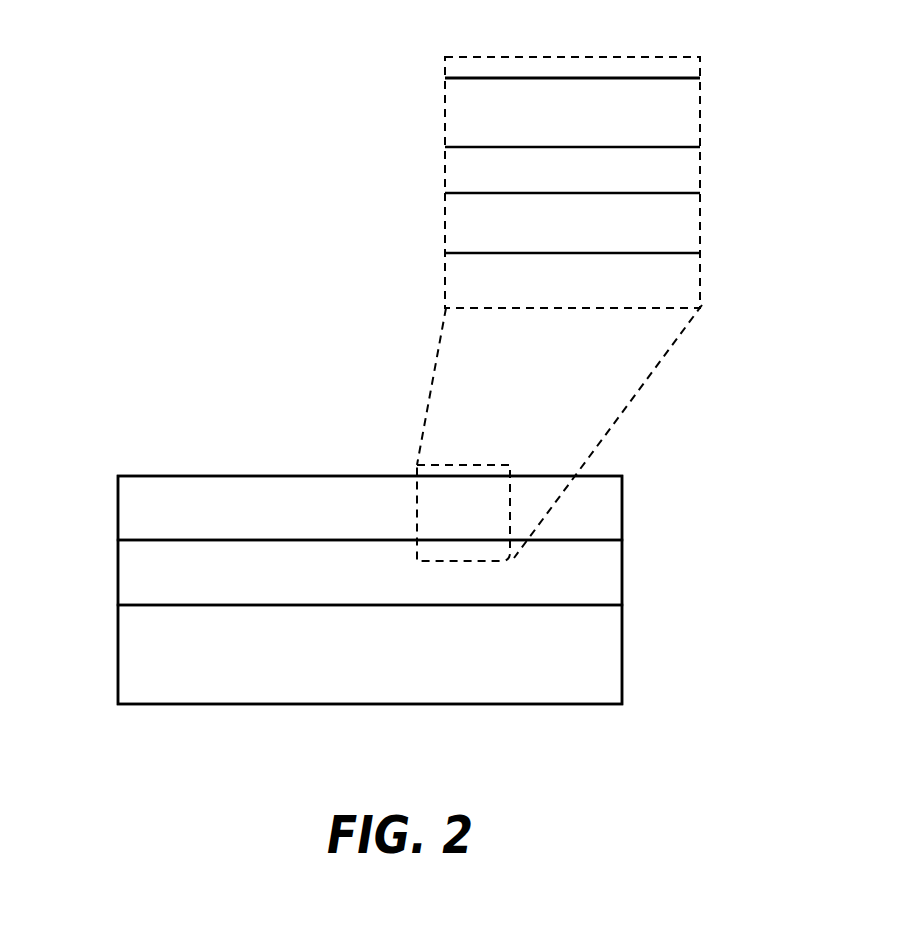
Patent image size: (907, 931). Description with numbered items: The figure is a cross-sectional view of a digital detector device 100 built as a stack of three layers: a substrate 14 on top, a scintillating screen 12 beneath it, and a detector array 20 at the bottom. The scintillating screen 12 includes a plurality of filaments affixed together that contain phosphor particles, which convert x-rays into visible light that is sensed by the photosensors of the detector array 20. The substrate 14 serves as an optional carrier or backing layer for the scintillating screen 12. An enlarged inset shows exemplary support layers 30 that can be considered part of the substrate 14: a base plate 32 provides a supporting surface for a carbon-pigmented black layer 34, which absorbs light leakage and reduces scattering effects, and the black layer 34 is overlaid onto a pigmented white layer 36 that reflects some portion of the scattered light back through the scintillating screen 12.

The X-ray detector system 100 is at (458, 777).
The scintillating screen 12 is at (623, 573).
The substrate 14 is at (600, 501).
The detector array 20 is at (622, 653).
The layered reflector structure 30 is at (616, 290).
The base plate 32 is at (511, 127).
The black layer 34 is at (644, 171).
The white layer 36 is at (511, 240).